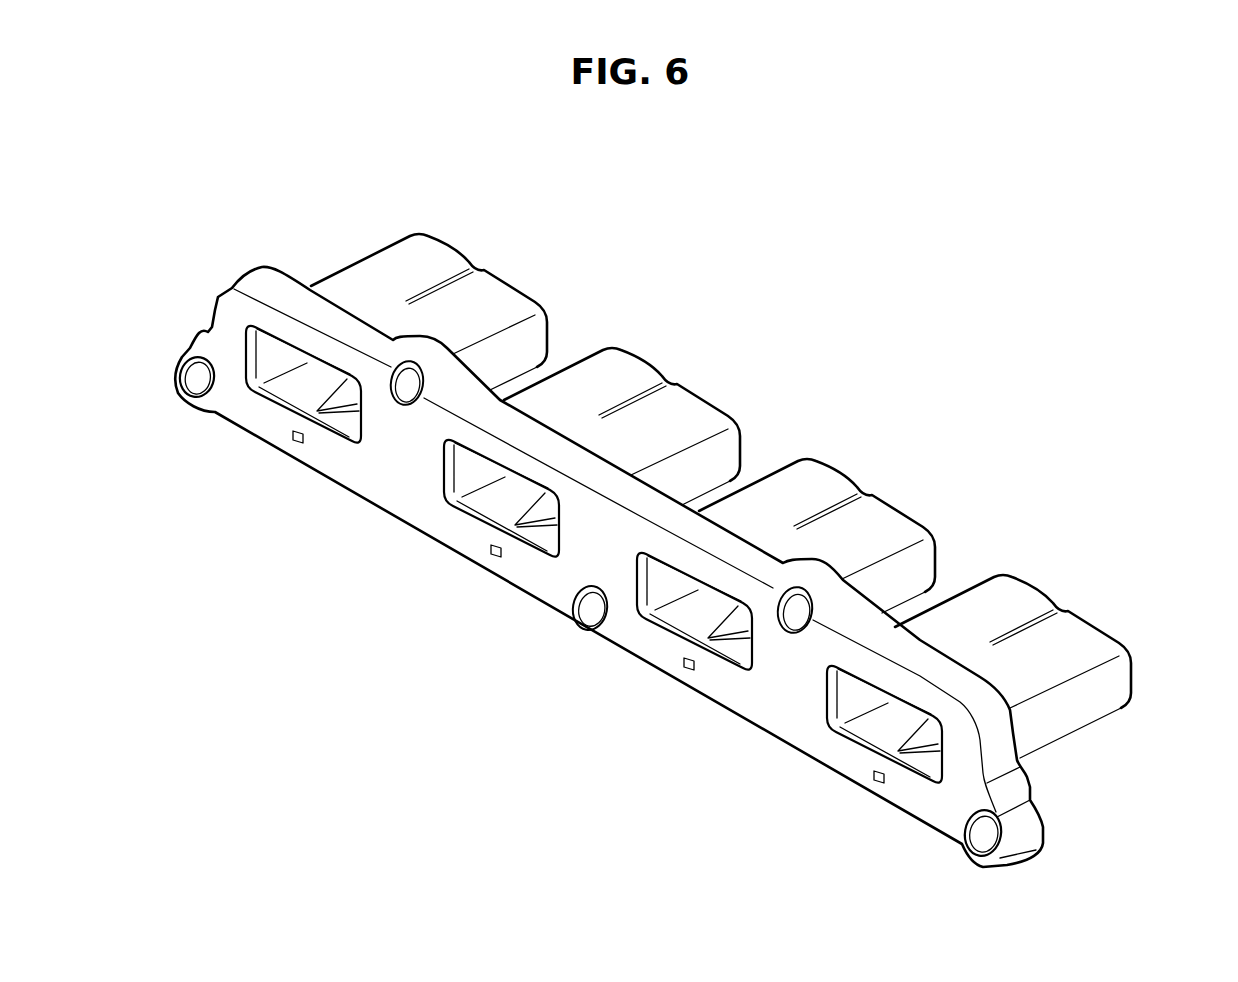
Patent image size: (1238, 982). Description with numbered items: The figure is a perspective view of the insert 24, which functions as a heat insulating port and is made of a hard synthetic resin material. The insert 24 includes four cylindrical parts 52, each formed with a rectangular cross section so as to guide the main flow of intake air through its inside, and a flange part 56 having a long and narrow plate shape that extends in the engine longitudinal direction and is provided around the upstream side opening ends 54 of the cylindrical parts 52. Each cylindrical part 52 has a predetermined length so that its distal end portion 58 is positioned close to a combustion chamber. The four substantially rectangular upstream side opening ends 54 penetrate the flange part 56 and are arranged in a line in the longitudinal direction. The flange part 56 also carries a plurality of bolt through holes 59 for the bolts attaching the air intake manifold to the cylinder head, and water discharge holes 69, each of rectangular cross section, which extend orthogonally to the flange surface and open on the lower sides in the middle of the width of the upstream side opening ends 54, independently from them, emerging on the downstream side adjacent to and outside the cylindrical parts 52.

The insert 24 is at (333, 212).
The cylindrical part 52 is at (433, 247).
The upstream side opening end 54 is at (457, 512).
The flange part 56 is at (268, 283).
The distal end portion 58 is at (1107, 625).
The bolt through hole 59 is at (200, 377).
The water discharge hole 69 is at (490, 553).